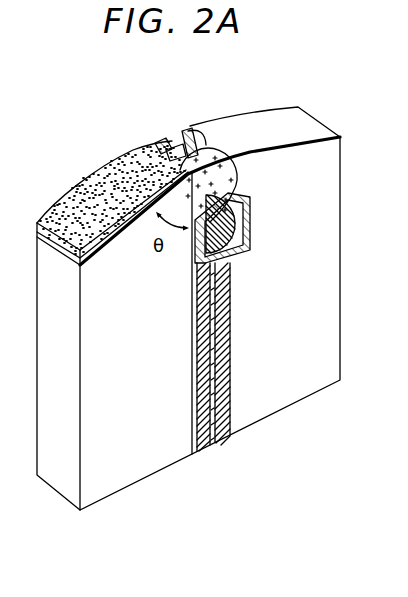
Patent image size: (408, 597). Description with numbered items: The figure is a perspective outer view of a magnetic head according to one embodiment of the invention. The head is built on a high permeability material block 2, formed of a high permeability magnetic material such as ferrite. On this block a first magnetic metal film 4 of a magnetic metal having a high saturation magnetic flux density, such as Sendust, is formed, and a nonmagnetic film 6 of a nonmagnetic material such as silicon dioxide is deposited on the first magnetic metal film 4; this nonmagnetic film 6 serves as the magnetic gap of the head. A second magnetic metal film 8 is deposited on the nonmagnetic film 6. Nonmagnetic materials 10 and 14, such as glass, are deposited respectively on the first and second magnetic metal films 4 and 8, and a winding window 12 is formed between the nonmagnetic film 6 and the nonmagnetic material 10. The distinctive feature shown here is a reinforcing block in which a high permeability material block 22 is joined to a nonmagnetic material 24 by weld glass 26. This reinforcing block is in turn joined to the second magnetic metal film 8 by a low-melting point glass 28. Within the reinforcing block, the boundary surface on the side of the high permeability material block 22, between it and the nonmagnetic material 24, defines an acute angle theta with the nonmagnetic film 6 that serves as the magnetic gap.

The high permeability material block 2 is at (312, 122).
The first magnetic metal film 4 is at (200, 140).
The nonmagnetic film 6 is at (186, 147).
The second magnetic metal film 8 is at (175, 146).
The nonmagnetic material 10 is at (244, 234).
The winding window 12 is at (250, 212).
The nonmagnetic material 14 is at (225, 148).
The high permeability material block 22 is at (62, 480).
The nonmagnetic material 24 is at (95, 186).
The weld glass 26 is at (58, 228).
The low-melting point glass 28 is at (160, 145).